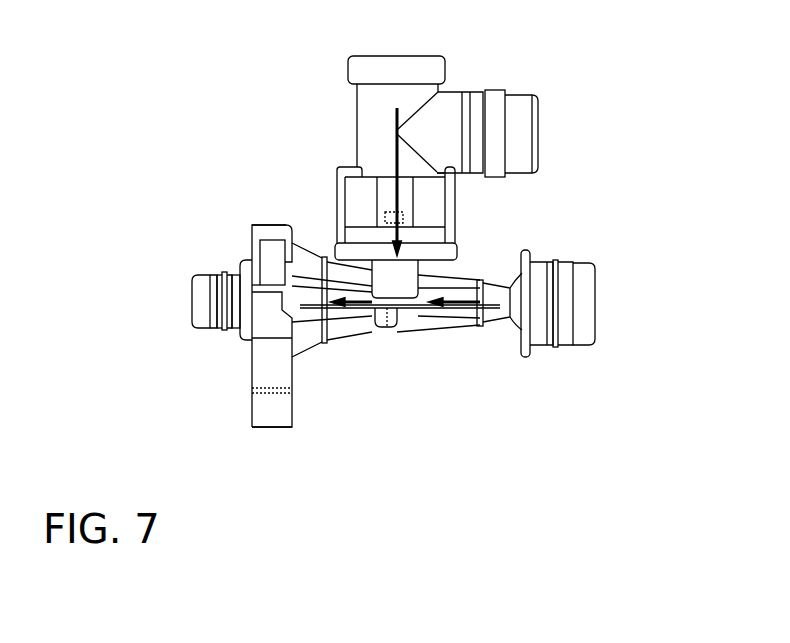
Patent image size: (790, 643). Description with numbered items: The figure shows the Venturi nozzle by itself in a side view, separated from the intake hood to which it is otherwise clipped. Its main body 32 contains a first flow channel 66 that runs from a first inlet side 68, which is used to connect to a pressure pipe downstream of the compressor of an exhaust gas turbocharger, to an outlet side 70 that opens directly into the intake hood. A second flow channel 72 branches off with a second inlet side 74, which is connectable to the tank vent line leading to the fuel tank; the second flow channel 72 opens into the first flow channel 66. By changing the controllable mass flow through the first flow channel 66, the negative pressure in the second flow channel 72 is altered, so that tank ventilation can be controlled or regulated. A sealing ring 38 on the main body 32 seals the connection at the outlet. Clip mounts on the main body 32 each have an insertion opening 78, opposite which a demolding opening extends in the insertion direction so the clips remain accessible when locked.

The second inlet side 74 is at (537, 132).
The second flow channel 72 is at (396, 150).
The insertion opening 78 is at (252, 217).
The outlet side 70 is at (176, 303).
The sealing ring 38 is at (220, 324).
The main body 32 is at (353, 330).
The first flow channel 66 is at (433, 307).
The first inlet side 68 is at (605, 307).